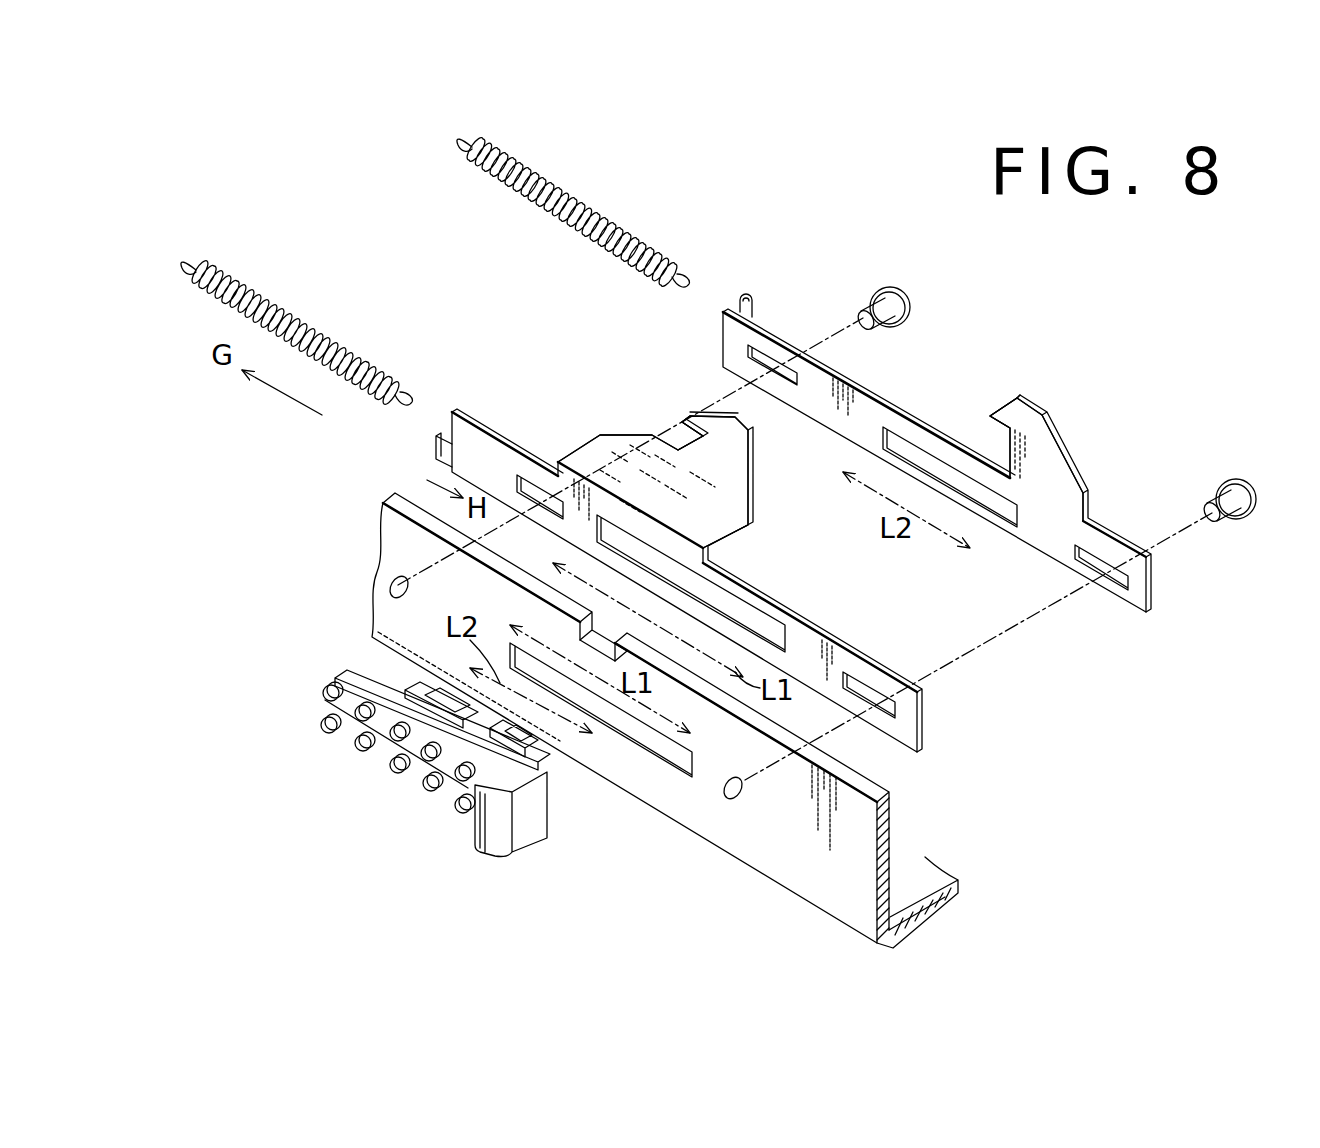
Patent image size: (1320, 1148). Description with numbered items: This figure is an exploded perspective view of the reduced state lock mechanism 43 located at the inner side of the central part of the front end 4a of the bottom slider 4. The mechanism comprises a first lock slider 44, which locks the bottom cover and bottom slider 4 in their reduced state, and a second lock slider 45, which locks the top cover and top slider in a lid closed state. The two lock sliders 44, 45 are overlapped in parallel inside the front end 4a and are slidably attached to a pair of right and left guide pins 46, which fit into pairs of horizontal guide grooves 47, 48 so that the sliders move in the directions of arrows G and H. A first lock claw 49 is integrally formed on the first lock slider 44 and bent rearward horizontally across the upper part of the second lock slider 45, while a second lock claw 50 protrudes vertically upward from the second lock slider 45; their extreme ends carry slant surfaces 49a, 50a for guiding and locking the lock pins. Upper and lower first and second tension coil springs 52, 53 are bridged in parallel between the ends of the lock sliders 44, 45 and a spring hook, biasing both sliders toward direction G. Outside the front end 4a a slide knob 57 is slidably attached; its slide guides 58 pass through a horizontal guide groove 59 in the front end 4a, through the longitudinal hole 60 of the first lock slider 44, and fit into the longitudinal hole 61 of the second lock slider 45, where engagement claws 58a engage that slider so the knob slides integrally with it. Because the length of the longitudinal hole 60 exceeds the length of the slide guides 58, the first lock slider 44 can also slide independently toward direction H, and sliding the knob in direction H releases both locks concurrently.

The bottom slider 4 is at (685, 720).
The front end of the bottom slider 4a is at (803, 855).
The reduced state lock mechanism 43 is at (955, 307).
The first lock slider 44 is at (707, 564).
The second lock slider 45 is at (910, 469).
The guide pin 46 is at (890, 287).
The horizontal guide groove 47 is at (527, 478).
The horizontal guide groove 48 is at (760, 385).
The first lock claw 49 is at (738, 466).
The slant surface 49a is at (693, 415).
The second lock claw 50 is at (1026, 423).
The slant surface 50a is at (1002, 397).
The first tension coil spring 52 is at (352, 350).
The second tension coil spring 53 is at (593, 220).
The slide knob 57 is at (459, 735).
The slide guide 58 is at (422, 700).
The engagement claw 58a is at (415, 772).
The guide groove 59 is at (680, 762).
The longitudinal hole 60 is at (797, 642).
The longitudinal hole 61 is at (1004, 528).